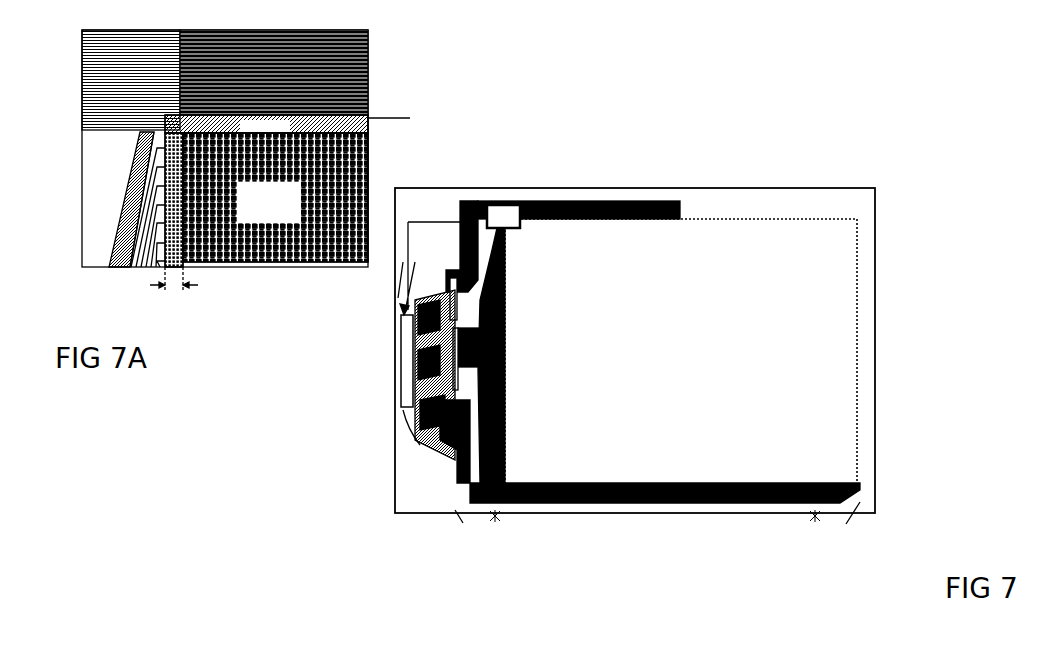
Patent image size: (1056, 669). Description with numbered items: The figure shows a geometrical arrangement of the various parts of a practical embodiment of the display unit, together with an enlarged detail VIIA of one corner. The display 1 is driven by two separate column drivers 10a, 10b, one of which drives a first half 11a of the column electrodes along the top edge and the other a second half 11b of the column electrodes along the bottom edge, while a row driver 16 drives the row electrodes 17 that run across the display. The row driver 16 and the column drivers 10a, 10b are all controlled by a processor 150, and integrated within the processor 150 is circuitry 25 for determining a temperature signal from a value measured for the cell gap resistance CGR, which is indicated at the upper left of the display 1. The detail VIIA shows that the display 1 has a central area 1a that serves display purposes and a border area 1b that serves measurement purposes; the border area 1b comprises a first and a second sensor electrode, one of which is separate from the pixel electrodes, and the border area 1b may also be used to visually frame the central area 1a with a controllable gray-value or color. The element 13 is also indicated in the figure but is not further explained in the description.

In FIG. 7, the display 1 is at (857, 347).
In FIG. 7A, the central area 1a is at (269, 230).
In FIG. 7A, the border area 1b is at (404, 120).
In FIG. 7, the column driver 10a is at (500, 293).
In FIG. 7, the column driver 10b is at (500, 411).
In FIG. 7, the first half of the column electrodes 11a is at (677, 187).
In FIG. 7, the second half of the column electrodes 11b is at (852, 522).
In FIG. 7, the contact pad 13 is at (390, 352).
In FIG. 7, the row driver 16 is at (500, 370).
In FIG. 7, the row electrodes 17 is at (500, 338).
In FIG. 7, the processor 150 is at (339, 380).
In FIG. 7, the circuitry 25 is at (408, 384).
In FIG. 7, the cell gap resistance CGR is at (463, 212).
In FIG. 7, the detail VIIA is at (485, 178).